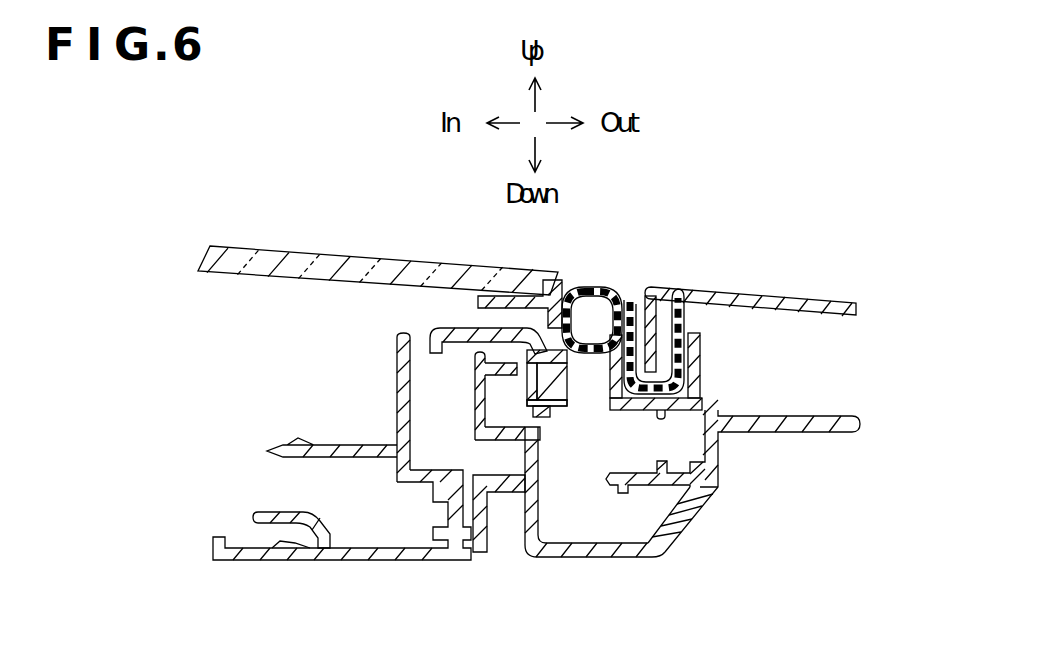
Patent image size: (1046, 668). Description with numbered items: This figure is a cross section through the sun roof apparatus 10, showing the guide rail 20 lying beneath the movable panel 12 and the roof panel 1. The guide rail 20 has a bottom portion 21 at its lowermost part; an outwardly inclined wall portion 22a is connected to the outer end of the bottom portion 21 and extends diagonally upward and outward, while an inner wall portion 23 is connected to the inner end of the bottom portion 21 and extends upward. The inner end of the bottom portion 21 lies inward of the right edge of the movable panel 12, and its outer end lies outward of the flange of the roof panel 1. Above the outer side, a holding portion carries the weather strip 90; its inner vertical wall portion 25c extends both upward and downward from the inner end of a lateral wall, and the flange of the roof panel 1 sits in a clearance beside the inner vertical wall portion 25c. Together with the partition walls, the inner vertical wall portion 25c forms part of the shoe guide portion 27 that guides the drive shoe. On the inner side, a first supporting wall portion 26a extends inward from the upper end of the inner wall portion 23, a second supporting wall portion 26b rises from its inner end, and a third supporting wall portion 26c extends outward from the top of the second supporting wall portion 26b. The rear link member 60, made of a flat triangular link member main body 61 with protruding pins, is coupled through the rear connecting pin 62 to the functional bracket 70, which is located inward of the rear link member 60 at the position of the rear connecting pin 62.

The sun roof apparatus 10 is at (286, 115).
The movable panel 12 is at (303, 258).
The roof panel 1 is at (733, 285).
The weather strip 90 is at (609, 273).
The functional bracket 70 is at (465, 328).
The shoe guide portion 27 is at (397, 385).
The third supporting wall portion 26c is at (502, 372).
The second supporting wall portion 26b is at (477, 393).
The first supporting wall portion 26a is at (514, 440).
The rear connecting pin 62 is at (567, 372).
The link member main body 61 is at (558, 412).
The rear link member 60 is at (560, 459).
The inner vertical wall portion 25c is at (603, 401).
The inner wall portion 23 is at (510, 506).
The outwardly inclined wall portion 22a is at (705, 512).
The bottom portion 21 is at (603, 560).
The guide rail 20 is at (443, 587).